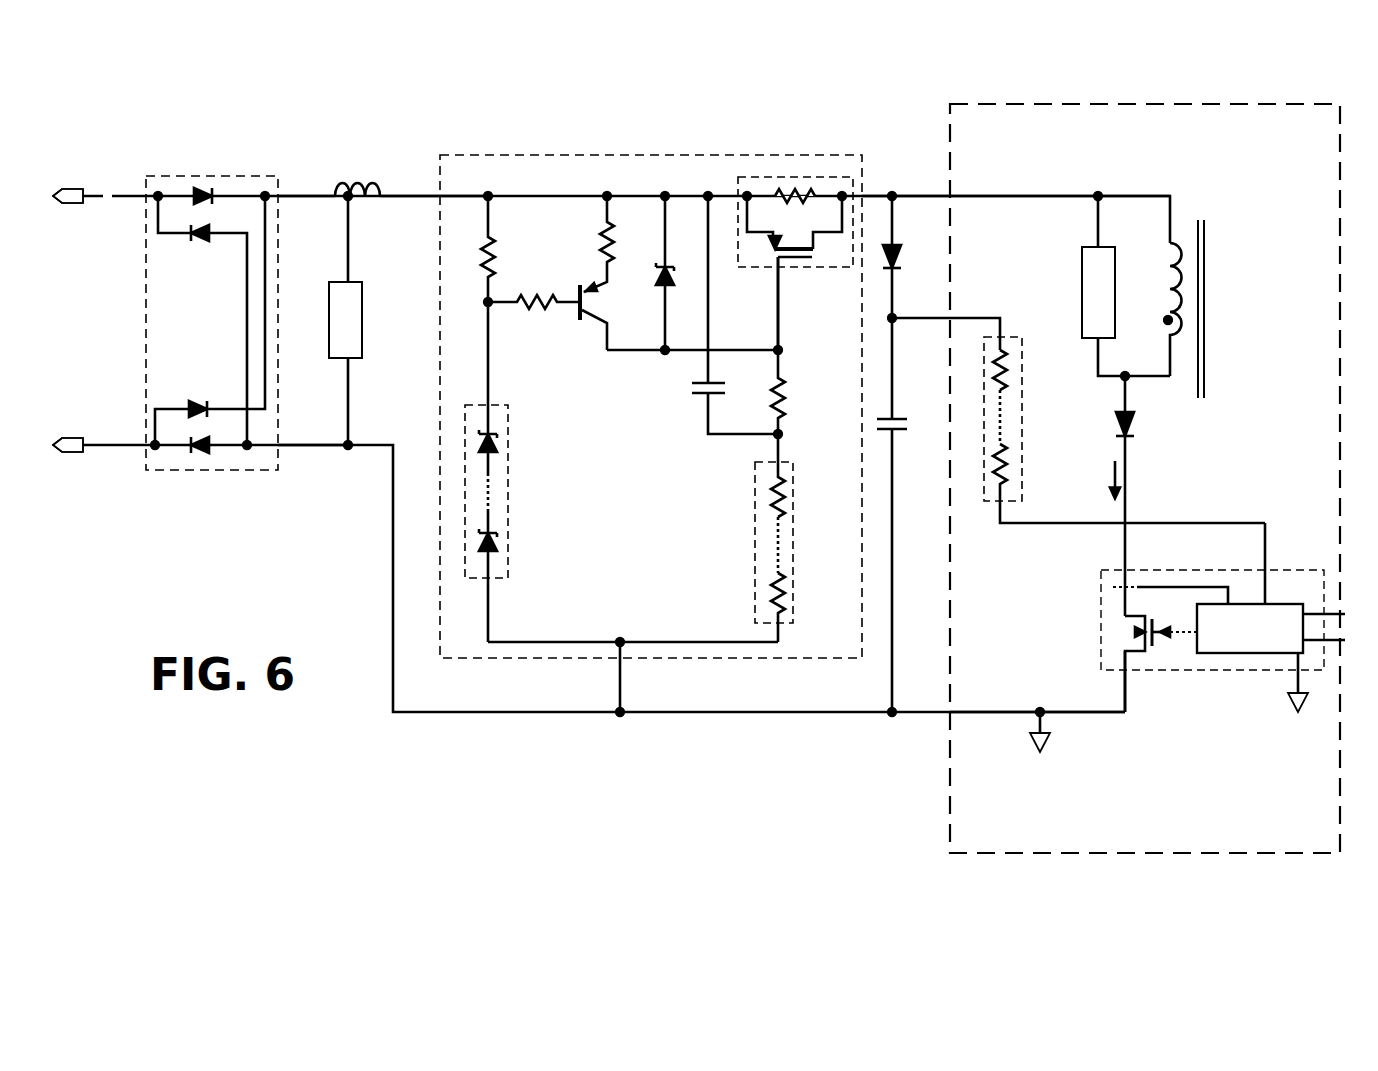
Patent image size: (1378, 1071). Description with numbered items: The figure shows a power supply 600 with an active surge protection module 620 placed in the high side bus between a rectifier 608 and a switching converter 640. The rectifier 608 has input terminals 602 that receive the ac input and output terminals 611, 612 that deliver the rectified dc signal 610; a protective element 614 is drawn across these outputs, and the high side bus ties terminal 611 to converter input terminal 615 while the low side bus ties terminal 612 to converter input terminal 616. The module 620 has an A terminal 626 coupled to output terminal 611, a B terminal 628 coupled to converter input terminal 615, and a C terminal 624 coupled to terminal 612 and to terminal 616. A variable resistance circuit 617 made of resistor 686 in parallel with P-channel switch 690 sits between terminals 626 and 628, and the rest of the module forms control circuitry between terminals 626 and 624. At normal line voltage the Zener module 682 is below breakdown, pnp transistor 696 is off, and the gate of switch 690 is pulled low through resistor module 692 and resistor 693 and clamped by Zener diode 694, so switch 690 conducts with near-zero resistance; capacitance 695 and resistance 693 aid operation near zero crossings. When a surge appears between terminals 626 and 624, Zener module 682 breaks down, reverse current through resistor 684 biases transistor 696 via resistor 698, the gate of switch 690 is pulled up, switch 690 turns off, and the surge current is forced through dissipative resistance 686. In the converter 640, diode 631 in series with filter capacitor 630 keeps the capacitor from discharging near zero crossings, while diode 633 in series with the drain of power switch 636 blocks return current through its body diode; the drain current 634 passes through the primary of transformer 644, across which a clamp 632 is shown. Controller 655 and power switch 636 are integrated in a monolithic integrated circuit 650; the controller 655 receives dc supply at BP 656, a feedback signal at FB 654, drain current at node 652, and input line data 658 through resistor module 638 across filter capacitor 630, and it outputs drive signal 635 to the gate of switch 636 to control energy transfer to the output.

The power supply 600 is at (144, 74).
The input terminals 602 is at (75, 220).
The rectifier 608 is at (187, 172).
The rectified dc signal Vrect 610 is at (315, 223).
The output terminal 611 is at (295, 188).
The output terminal 612 is at (293, 450).
The surge protection device 614 is at (382, 325).
The input terminal 615 is at (978, 188).
The input terminal 616 is at (977, 717).
The variable resistance circuit 617 is at (833, 268).
The surge protection module 620 is at (628, 147).
The terminal C2 624 is at (587, 677).
The terminal A2 626 is at (420, 168).
The terminal B2 628 is at (873, 162).
The filter capacitor CF 630 is at (903, 418).
The diode 631 is at (935, 242).
The clamp circuit 632 is at (1082, 237).
The diode 633 is at (1107, 418).
The switch current 634 is at (1107, 476).
The drive signal 635 is at (1179, 644).
The power switch S1 636 is at (1124, 636).
The resistor module 638 is at (1023, 357).
The switching converter 640 is at (1118, 847).
The transformer T1 644 is at (1178, 200).
The monolithic integrated circuit 650 is at (1186, 674).
The node 652 is at (1135, 576).
The FB 654 is at (1328, 606).
The controller 655 is at (1222, 659).
The BP 656 is at (1328, 651).
The input line data 658 is at (1273, 546).
The Zener module 682 is at (512, 468).
The resistor 684 is at (477, 265).
The resistor 686 is at (790, 182).
The switch 690 is at (772, 252).
The resistor module 692 is at (825, 527).
The resistor 693 is at (792, 395).
The Zener diode 694 is at (660, 263).
The capacitance 695 is at (705, 395).
The pnp transistor 696 is at (593, 253).
The resistor 698 is at (548, 287).